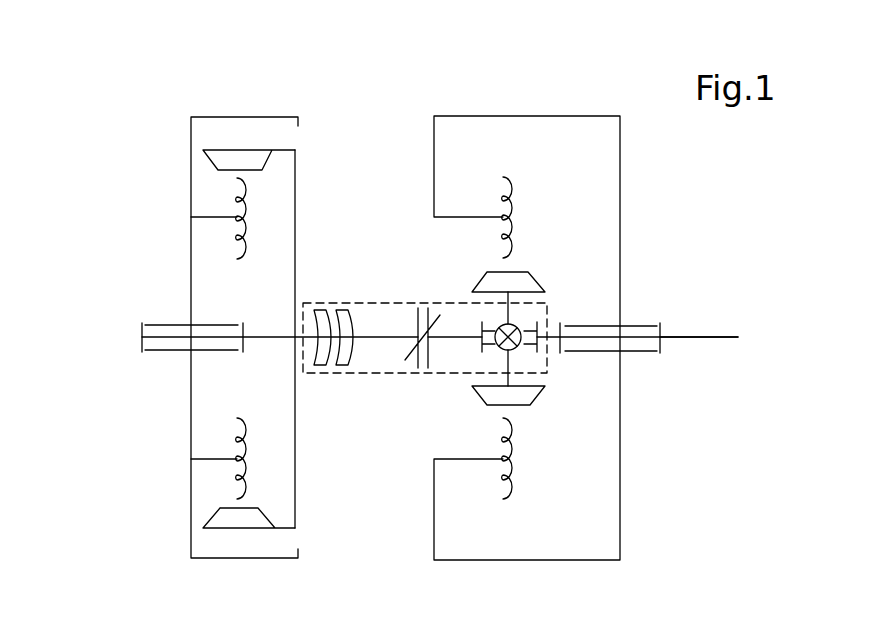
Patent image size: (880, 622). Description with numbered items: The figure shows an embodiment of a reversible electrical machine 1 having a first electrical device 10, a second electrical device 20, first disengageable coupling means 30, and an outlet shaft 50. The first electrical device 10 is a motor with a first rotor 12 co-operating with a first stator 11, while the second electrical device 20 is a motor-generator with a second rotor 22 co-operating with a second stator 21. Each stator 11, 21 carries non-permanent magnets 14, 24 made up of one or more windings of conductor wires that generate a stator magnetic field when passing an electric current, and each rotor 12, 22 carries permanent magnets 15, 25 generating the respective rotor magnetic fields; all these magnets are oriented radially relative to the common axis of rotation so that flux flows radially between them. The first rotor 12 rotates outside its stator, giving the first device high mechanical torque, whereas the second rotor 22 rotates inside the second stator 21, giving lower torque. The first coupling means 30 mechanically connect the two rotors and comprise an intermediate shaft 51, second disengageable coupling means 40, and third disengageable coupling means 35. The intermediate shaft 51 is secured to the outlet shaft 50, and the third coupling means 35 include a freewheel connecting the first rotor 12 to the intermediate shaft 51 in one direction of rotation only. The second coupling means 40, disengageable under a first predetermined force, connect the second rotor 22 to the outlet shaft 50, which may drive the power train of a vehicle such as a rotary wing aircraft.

The reversible electrical machine 1 is at (128, 190).
The first electrical device 10 is at (234, 100).
The first stator 11 is at (213, 217).
The first rotor 12 is at (296, 486).
The non-permanent magnets 14 is at (245, 258).
The permanent magnets 15 is at (223, 160).
The second electrical device 20 is at (494, 98).
The second stator 21 is at (460, 217).
The second rotor 22 is at (520, 398).
The non-permanent magnets 24 is at (519, 190).
The permanent magnets 25 is at (530, 273).
The first disengageable coupling means 30 is at (388, 373).
The third disengageable coupling means 35 is at (330, 313).
The second disengageable coupling means 40 is at (516, 326).
The outlet shaft 50 is at (705, 340).
The intermediate shaft 51 is at (378, 337).